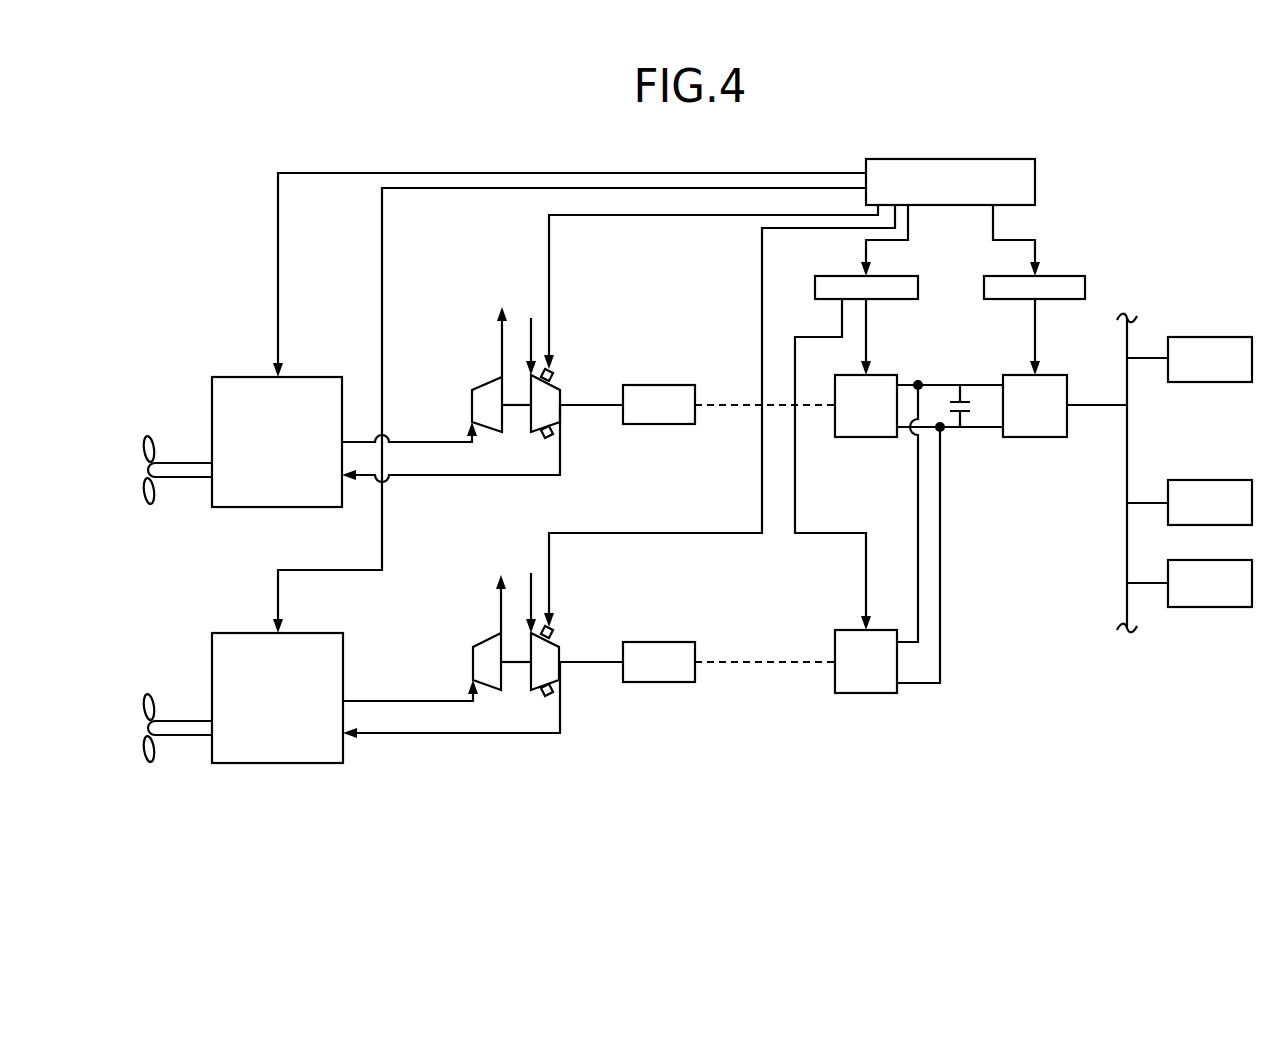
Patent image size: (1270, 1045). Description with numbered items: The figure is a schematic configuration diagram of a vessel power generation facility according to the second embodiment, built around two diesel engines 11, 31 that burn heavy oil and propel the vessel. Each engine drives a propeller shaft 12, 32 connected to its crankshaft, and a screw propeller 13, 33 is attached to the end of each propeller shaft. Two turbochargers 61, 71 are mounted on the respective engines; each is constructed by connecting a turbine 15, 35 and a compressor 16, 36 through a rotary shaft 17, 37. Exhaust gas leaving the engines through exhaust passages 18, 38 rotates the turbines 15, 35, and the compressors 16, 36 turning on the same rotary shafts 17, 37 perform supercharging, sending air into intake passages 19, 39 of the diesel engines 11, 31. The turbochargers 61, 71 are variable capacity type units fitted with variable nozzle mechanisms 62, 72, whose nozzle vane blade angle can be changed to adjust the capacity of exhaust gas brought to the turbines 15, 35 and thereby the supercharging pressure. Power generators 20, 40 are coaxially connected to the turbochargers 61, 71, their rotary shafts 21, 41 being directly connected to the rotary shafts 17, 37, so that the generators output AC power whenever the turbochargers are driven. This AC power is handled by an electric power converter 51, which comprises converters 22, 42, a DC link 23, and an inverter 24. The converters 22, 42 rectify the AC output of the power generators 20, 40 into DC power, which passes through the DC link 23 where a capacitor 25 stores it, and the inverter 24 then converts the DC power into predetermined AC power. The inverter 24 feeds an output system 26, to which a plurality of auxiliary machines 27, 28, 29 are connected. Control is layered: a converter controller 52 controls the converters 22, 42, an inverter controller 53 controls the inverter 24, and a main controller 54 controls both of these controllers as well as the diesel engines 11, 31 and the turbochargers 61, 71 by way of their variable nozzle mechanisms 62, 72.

The diesel engine 11 is at (242, 375).
The propeller shaft 12 is at (181, 462).
The screw propeller 13 is at (143, 446).
The turbine 15 is at (472, 392).
The compressor 16 is at (562, 394).
The rotary shaft 17 is at (518, 407).
The exhaust passage 18 is at (402, 441).
The intake passage 19 is at (418, 477).
The power generator 20 is at (662, 380).
The rotary shaft 21 is at (593, 407).
The converter 22 is at (880, 375).
The DC link 23 is at (947, 384).
The inverter 24 is at (1050, 375).
The capacitor 25 is at (967, 413).
The output system 26 is at (1127, 548).
The auxiliary machine 27 is at (1200, 337).
The auxiliary machine 28 is at (1200, 480).
The auxiliary machine 29 is at (1200, 560).
The diesel engine 31 is at (244, 629).
The propeller shaft 32 is at (181, 720).
The screw propeller 33 is at (143, 704).
The turbine 35 is at (473, 650).
The compressor 36 is at (562, 650).
The rotary shaft 37 is at (518, 664).
The exhaust passage 38 is at (402, 699).
The intake passage 39 is at (418, 735).
The power generator 40 is at (662, 639).
The rotary shaft 41 is at (593, 664).
The converter 42 is at (852, 630).
The electric power converter 51 is at (1084, 326).
The converter controller 52 is at (883, 276).
The inverter controller 53 is at (1052, 276).
The main controller 54 is at (983, 159).
The turbocharger 61 is at (466, 341).
The variable nozzle mechanism 62 is at (550, 439).
The turbocharger 71 is at (565, 601).
The variable nozzle mechanism 72 is at (550, 697).